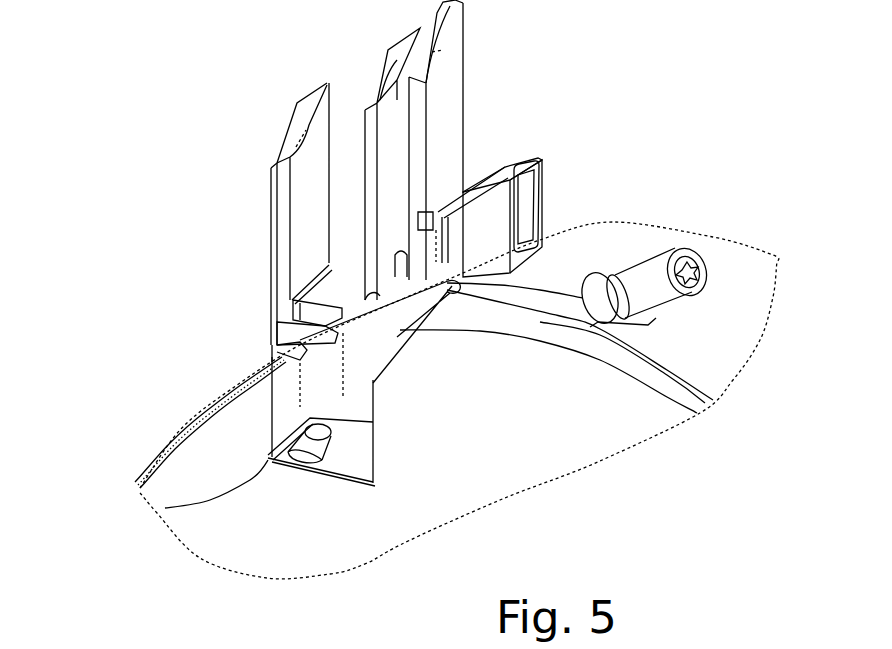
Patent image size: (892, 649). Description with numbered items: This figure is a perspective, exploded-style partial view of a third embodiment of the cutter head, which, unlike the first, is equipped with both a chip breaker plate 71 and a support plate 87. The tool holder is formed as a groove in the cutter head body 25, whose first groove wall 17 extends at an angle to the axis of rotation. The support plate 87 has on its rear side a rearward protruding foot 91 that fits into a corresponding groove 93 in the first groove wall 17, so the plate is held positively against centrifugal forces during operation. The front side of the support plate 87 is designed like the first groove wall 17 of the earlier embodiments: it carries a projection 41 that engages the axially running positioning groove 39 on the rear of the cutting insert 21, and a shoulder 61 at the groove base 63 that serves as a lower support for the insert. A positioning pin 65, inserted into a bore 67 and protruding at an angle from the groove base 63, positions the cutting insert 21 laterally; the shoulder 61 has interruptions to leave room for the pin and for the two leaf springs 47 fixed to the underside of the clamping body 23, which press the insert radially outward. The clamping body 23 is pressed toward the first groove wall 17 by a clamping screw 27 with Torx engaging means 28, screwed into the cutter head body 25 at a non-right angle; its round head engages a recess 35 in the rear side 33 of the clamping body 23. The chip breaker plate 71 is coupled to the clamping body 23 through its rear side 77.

The first groove wall 17 is at (283, 398).
The cutting insert 21 is at (372, 108).
The clamping body 23 is at (497, 167).
The cutter head body 25 is at (625, 427).
The clamping screw 27 is at (650, 277).
The engaging means 28 is at (683, 262).
The rear side 33 is at (543, 236).
The recess 35 is at (528, 200).
The positioning groove 39 is at (342, 258).
The projection 41 is at (295, 302).
The leaf springs 47 is at (453, 275).
The shoulder 61 is at (268, 361).
The groove base 63 is at (357, 462).
The positioning pin 65 is at (313, 452).
The bore 67 is at (293, 463).
The chip breaker plate 71 is at (463, 85).
The rear side 77 is at (453, 50).
The support plate 87 is at (272, 252).
The foot 91 is at (275, 333).
The groove 93 is at (165, 508).